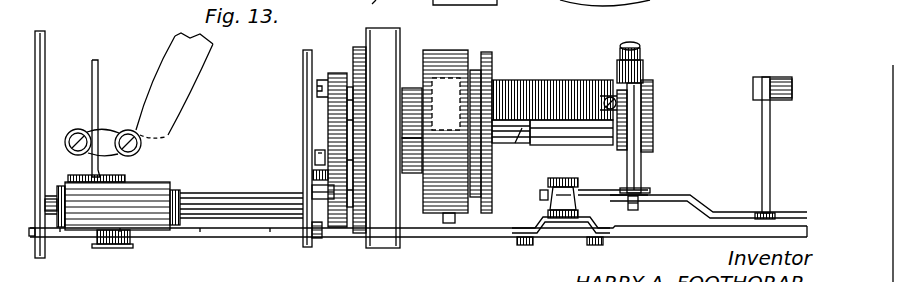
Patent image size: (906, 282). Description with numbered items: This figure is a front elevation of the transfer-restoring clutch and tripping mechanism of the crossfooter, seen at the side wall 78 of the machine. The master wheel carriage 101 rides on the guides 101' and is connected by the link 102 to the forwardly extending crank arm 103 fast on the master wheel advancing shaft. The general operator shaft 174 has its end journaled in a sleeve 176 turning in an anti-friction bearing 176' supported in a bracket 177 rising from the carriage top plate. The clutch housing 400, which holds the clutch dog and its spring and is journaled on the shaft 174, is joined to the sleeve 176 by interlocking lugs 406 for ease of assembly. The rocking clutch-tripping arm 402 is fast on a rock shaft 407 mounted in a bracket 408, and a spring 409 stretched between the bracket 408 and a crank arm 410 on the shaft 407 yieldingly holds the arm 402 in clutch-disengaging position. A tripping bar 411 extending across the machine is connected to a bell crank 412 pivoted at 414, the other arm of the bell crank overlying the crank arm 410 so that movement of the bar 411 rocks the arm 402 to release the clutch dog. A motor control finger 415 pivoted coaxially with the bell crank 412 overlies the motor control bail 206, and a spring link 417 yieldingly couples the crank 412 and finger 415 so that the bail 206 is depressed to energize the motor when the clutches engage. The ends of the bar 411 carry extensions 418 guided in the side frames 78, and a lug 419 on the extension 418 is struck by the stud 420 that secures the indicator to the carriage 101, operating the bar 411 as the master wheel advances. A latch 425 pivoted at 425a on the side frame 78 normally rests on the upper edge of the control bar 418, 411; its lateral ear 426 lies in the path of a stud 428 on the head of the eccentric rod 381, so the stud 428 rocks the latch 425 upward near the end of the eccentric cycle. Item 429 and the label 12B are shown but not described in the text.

The side wall 78 is at (39, 31).
The master wheel carriage 101 is at (124, 189).
The guides 101' is at (241, 192).
The link 102 is at (105, 130).
The crank arm 103 is at (171, 53).
The stud 420 is at (100, 245).
The lug 419 is at (258, 237).
The eccentric rod 381 is at (335, 126).
The stud 428 is at (345, 133).
The pivot 425a is at (318, 157).
The spacer 429 is at (313, 177).
The lateral ear 426 is at (313, 198).
The latch 425 is at (318, 238).
The anti-friction bearings 176' is at (343, 132).
The bracket 177 is at (386, 32).
The part 12B is at (372, 4).
The interlocking lugs 406 is at (410, 87).
The sleeve 176 is at (422, 206).
The housing 400 is at (450, 53).
The clutch-tripping arm 402 is at (448, 223).
The general operator shaft 174 is at (517, 143).
The bracket 408 is at (559, 82).
The rock shaft 407 is at (537, 118).
The pivot 414 is at (577, 170).
The bell crank 412 is at (625, 190).
The spring 409 is at (643, 68).
The crank arm 410 is at (640, 166).
The spring link 417 is at (638, 211).
The motor control finger 415 is at (703, 202).
The tripping bar 411 is at (640, 238).
The extension 418 is at (506, 240).
The motor control bail 206 is at (762, 119).